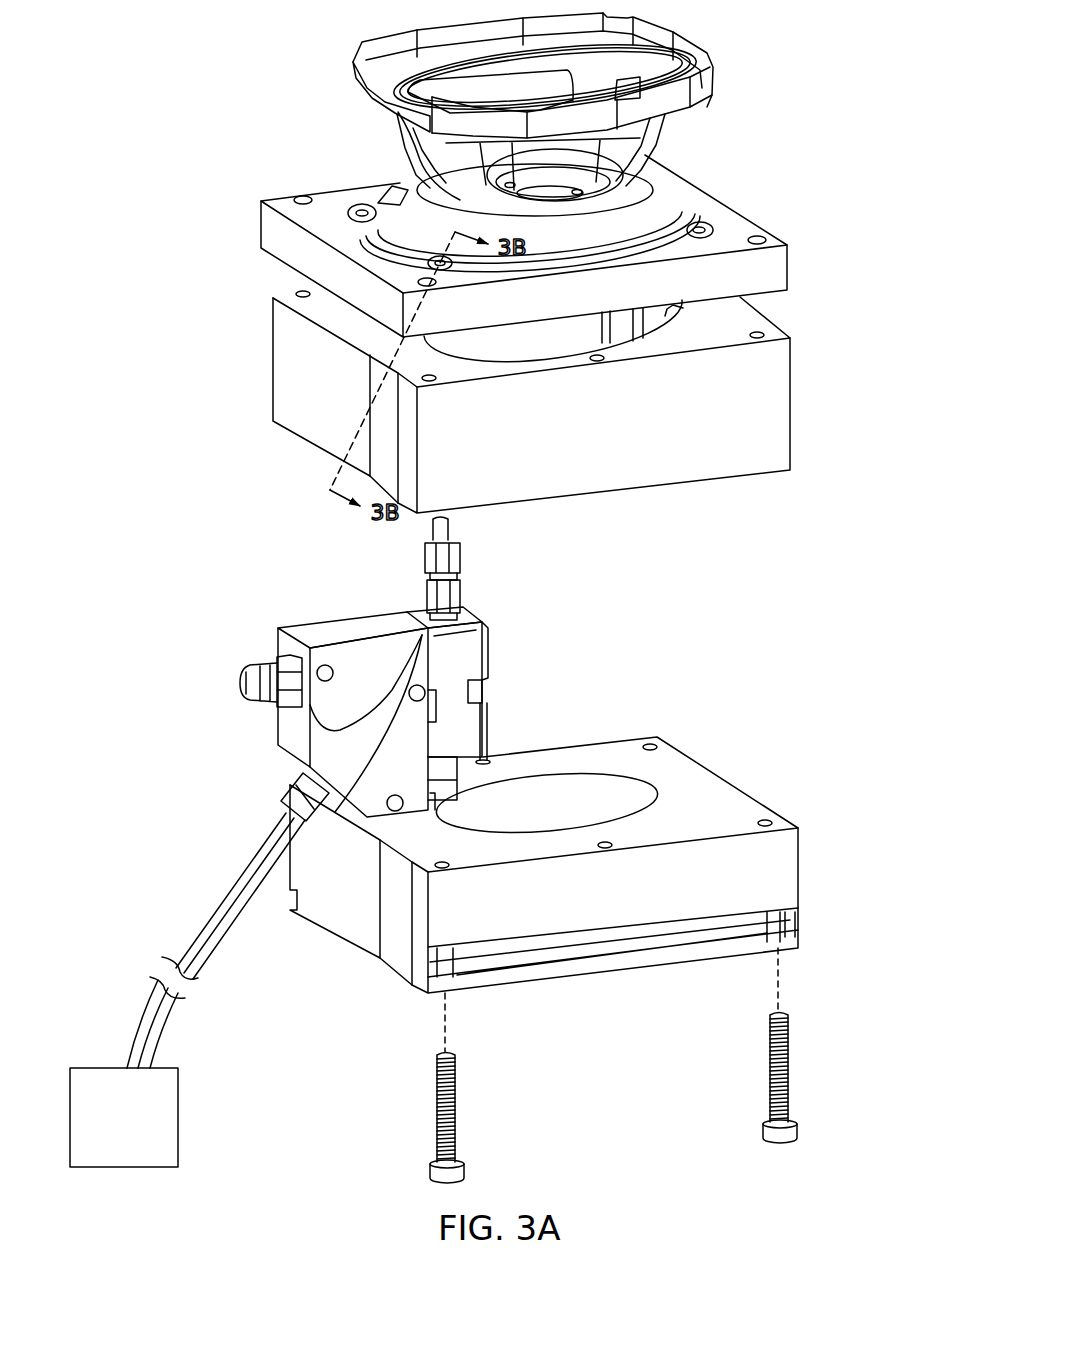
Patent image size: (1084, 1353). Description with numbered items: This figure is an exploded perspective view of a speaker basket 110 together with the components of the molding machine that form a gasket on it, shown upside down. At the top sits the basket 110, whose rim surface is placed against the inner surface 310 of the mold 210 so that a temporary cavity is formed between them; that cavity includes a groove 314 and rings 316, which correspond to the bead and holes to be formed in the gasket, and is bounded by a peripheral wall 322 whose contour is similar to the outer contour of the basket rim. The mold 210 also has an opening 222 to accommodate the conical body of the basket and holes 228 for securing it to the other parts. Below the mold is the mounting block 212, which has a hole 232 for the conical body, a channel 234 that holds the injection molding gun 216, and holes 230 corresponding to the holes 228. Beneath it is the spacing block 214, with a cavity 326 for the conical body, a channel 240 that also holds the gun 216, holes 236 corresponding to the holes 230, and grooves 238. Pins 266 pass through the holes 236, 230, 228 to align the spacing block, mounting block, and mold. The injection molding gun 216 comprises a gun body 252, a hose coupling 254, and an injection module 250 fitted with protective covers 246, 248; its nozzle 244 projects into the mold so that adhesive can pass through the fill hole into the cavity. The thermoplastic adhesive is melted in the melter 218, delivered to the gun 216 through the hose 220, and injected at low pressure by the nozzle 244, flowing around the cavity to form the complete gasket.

The basket 110 is at (665, 141).
The mold 210 is at (805, 262).
The mounting block 212 is at (805, 398).
The spacing block 214 is at (822, 865).
The injection molding gun 216 is at (278, 742).
The melter 218 is at (164, 1113).
The hose 220 is at (232, 895).
The opening 222 is at (606, 215).
The holes 228 is at (303, 194).
The holes 230 is at (762, 332).
The hole 232 is at (545, 345).
The channel 234 is at (386, 445).
The holes 236 is at (767, 820).
The grooves 238 is at (612, 942).
The channel 240 is at (398, 942).
The nozzle 244 is at (440, 562).
The protective cover 246 is at (488, 643).
The protective cover 248 is at (488, 742).
The injection module 250 is at (452, 653).
The gun body 252 is at (418, 770).
The hose coupling 254 is at (286, 808).
The pins 266 is at (466, 1110).
The inner surface 310 is at (700, 220).
The groove 314 is at (340, 250).
The rings 316 is at (705, 226).
The peripheral wall 322 is at (383, 196).
The cavity 326 is at (580, 797).